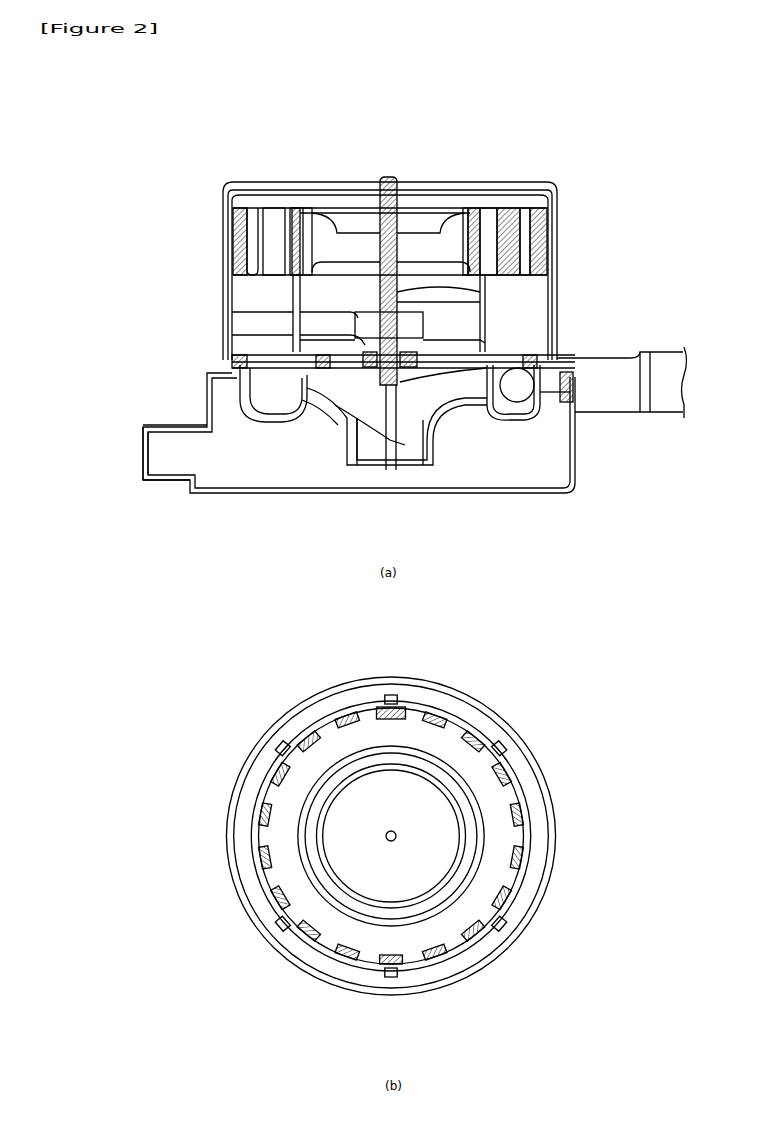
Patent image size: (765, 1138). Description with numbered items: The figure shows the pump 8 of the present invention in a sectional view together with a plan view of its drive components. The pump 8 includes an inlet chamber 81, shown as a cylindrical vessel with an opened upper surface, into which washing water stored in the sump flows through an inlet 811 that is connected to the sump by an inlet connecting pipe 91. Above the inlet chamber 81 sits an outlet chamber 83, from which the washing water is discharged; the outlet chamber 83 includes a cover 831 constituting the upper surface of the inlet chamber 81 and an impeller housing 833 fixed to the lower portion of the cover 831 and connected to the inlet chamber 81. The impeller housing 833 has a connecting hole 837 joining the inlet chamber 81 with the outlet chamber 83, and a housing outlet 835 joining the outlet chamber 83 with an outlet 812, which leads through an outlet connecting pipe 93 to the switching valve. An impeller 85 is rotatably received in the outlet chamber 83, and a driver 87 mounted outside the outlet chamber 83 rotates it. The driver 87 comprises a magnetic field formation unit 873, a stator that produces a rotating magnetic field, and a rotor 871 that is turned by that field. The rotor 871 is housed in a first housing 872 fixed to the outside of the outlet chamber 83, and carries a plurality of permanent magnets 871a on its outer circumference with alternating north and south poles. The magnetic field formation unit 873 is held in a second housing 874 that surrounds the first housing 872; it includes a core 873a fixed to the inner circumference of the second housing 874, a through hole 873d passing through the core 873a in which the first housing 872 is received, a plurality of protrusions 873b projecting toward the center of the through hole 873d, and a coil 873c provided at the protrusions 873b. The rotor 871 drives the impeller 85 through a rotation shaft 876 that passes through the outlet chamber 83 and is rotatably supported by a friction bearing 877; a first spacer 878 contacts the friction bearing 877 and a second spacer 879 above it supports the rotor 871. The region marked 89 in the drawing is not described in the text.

The pump 8 is at (190, 206).
The inlet chamber 81 is at (512, 460).
The inlet 811 is at (192, 480).
The outlet 812 is at (607, 402).
The outlet chamber 83 is at (612, 343).
The cover 831 is at (480, 302).
The impeller housing 833 is at (485, 340).
The housing outlet 835 is at (522, 395).
The connecting hole 837 is at (435, 450).
The impeller 85 is at (337, 400).
The driver 87 is at (555, 112).
The rotor 871 is at (455, 225).
The permanent magnets 871a is at (462, 883).
The first housing 872 is at (442, 240).
The magnetic field formation unit 873 is at (302, 180).
The core 873a is at (283, 206).
The protrusions 873b is at (247, 205).
The coil 873c is at (234, 217).
The through hole 873d is at (455, 728).
The second housing 874 is at (556, 212).
The rotation shaft 876 is at (383, 177).
The friction bearing 877 is at (245, 337).
The first spacer 878 is at (245, 310).
The second spacer 879 is at (548, 290).
The flow chamber 89 is at (307, 417).
The inlet connecting pipe 91 is at (158, 460).
The outlet connecting pipe 93 is at (662, 405).